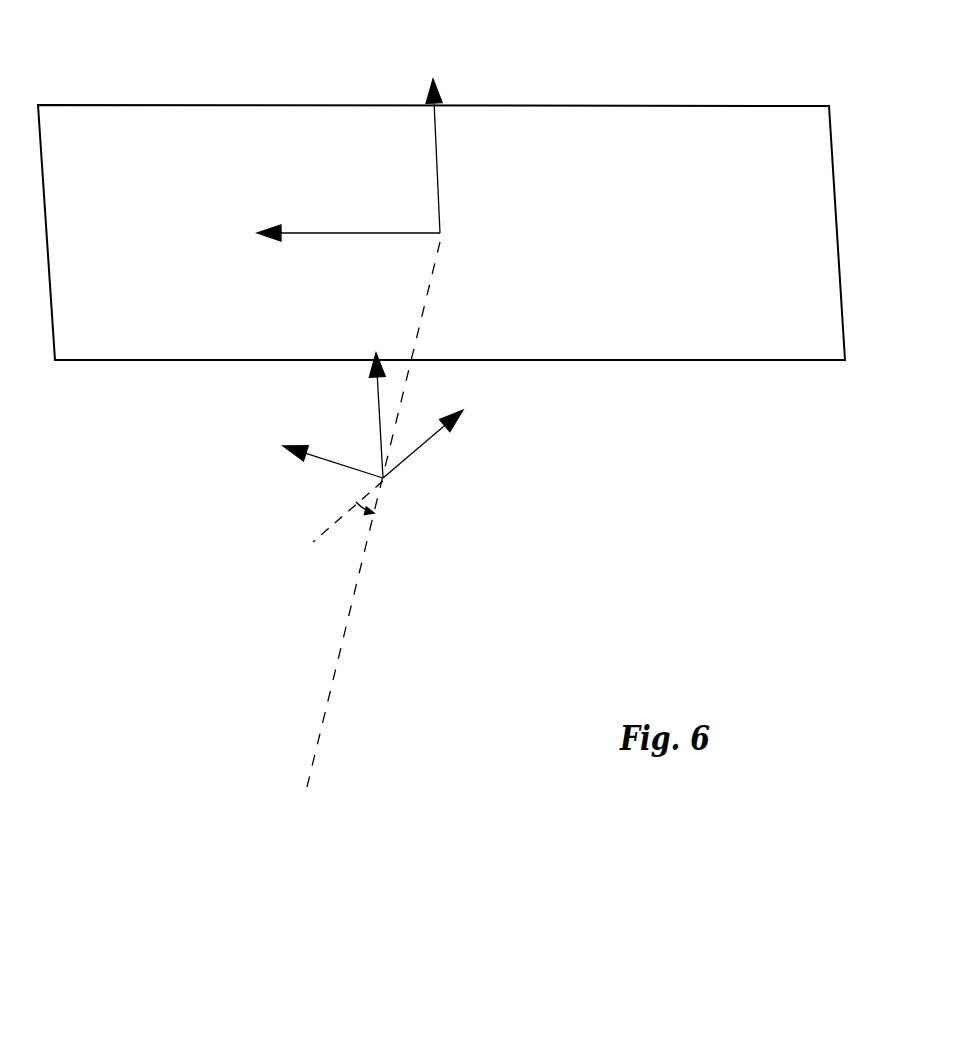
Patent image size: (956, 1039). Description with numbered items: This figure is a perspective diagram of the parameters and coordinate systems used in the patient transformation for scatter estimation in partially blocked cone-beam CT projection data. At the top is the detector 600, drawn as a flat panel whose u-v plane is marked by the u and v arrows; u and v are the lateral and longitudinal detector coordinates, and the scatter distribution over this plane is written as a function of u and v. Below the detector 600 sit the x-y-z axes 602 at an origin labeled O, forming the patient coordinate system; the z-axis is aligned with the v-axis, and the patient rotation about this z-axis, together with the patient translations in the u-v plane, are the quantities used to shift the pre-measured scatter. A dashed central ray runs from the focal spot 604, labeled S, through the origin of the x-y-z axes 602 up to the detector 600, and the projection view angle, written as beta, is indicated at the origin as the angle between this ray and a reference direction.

The detector 600 is at (598, 107).
The x-y-z axes 602 is at (433, 493).
The focal spot 604 is at (325, 813).